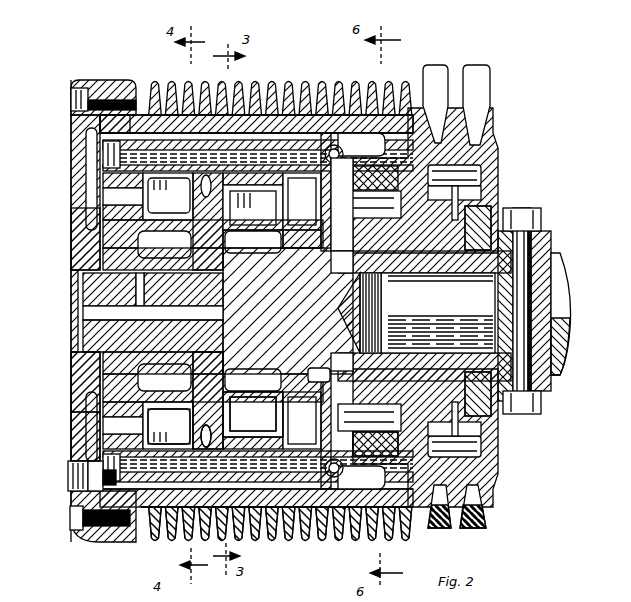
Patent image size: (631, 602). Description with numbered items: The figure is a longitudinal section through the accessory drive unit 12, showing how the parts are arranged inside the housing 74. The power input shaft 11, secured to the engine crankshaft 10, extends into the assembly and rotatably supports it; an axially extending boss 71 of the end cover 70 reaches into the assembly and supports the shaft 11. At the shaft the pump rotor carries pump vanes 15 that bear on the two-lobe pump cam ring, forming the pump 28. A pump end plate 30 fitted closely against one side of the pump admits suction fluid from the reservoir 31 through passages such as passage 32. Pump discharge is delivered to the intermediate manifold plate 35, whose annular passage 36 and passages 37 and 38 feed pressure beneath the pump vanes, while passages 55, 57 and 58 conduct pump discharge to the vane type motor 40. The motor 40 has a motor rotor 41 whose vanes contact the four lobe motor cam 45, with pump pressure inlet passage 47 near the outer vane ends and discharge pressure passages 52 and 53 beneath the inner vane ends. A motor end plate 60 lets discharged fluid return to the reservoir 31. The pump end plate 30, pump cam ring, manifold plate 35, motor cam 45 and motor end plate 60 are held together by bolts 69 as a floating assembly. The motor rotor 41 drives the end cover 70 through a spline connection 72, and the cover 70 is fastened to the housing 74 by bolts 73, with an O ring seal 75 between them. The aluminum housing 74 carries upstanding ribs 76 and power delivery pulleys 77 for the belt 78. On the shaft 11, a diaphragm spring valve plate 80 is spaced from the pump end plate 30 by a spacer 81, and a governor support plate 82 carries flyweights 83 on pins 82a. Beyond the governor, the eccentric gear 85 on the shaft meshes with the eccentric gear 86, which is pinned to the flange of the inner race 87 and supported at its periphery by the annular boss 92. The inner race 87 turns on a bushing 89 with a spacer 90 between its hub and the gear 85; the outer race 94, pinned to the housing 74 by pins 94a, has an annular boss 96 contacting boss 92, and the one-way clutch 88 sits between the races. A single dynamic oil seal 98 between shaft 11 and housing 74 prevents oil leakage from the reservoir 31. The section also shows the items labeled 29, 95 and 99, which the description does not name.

The crankshaft 10 is at (553, 250).
The power input shaft 11 is at (420, 272).
The accessory drive unit 12 is at (58, 490).
The pump vanes 15 is at (225, 240).
The pump 28 is at (255, 110).
The race 29 is at (270, 248).
The pump end plate 30 is at (302, 360).
The reservoir 31 is at (80, 437).
The passage 32 is at (246, 408).
The intermediate manifold plate 35 is at (160, 415).
The annular passage 36 is at (193, 428).
The passage 37 is at (204, 418).
The passage 38 is at (254, 402).
The vane type motor 40 is at (140, 126).
The motor rotor 41 is at (118, 345).
The motor cam 45 is at (125, 205).
The pump pressure inlet passage 47 is at (205, 182).
The pump discharge pressure passage 52 is at (300, 214).
The pump discharge pressure passage 53 is at (296, 250).
The passage 55 is at (247, 221).
The passage 57 is at (168, 172).
The passage 58 is at (166, 206).
The motor end plate 60 is at (95, 415).
The bolts 69 is at (96, 148).
The end cover 70 is at (63, 212).
The boss 71 is at (120, 272).
The spline connection 72 is at (170, 268).
The bolts 73 is at (63, 92).
The housing 74 is at (100, 78).
The O ring seal 75 is at (96, 113).
The ribs 76 is at (268, 536).
The power delivery pulleys 77 is at (478, 117).
The belt 78 is at (470, 70).
The diaphragm spring valve plate 80 is at (312, 428).
The spacer 81 is at (300, 302).
The governor support plate 82 is at (323, 362).
The pins 82a is at (327, 138).
The flyweights 83 is at (368, 108).
The eccentric gear 85 is at (356, 374).
The eccentric gear 86 is at (352, 243).
The inner race 87 is at (444, 265).
The one-way clutch 88 is at (405, 243).
The bushing 89 is at (440, 346).
The spacer 90 is at (385, 356).
The annular boss 92 is at (372, 460).
The outer race 94 is at (470, 455).
The pins 94a is at (486, 438).
The roller 95 is at (420, 170).
The annular boss 96 is at (372, 142).
The dynamic oil seal 98 is at (490, 400).
The nut 99 is at (528, 200).